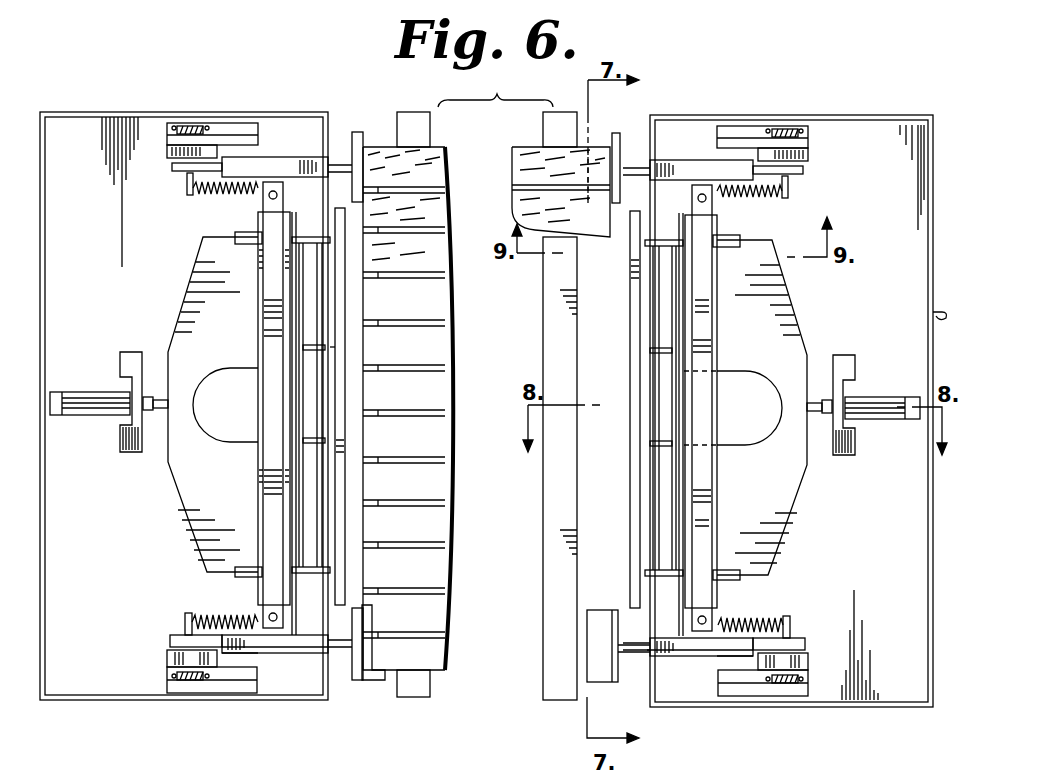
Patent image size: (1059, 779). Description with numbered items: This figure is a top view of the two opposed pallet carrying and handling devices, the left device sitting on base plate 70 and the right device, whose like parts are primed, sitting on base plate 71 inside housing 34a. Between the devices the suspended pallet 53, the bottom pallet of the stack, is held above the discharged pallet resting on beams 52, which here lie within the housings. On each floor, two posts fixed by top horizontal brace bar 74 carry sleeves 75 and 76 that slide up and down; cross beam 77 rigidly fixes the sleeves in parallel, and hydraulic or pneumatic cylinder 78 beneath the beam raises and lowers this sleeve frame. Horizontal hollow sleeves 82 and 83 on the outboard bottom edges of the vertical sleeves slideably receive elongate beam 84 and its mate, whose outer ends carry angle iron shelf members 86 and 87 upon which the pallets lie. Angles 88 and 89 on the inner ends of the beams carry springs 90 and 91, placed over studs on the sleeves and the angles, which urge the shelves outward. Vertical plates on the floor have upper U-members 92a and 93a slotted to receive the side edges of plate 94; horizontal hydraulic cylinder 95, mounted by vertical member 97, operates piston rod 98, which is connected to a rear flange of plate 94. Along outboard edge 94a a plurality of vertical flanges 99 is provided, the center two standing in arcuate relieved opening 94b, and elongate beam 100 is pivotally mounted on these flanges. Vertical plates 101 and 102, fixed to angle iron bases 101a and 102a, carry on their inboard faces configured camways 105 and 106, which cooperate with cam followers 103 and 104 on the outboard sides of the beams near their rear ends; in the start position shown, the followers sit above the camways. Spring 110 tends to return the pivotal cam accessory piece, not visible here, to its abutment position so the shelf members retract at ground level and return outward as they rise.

The housing 34a is at (934, 312).
The beams 52 is at (428, 692).
The suspended pallet 53 is at (513, 169).
The base plate 70 is at (122, 597).
The base plate 71 is at (874, 510).
The top horizontal brace bar 74 is at (700, 533).
The sleeve 75 is at (290, 628).
The sleeve 76 is at (290, 193).
The cross beam 77 is at (262, 477).
The hydraulic or pneumatic cylinder 78 is at (258, 398).
The horizontal hollow sleeve 82 is at (326, 690).
The horizontal hollow sleeve 83 is at (313, 157).
The elongate beam 84 is at (170, 641).
The angle iron shelf member 86 is at (367, 676).
The angle iron shelf member 87 is at (358, 135).
The angle 88 is at (189, 613).
The angle 89 is at (189, 193).
The spring 90 is at (243, 613).
The spring 91 is at (236, 193).
The upper U-member 92a is at (258, 568).
The upper U-member 93a is at (247, 246).
The plate 94 is at (188, 308).
The outboard edge of plate 94a is at (322, 348).
The arcuate relieved opening 94b is at (224, 438).
The horizontal hydraulic cylinder 95 is at (887, 405).
The vertical member 97 is at (137, 452).
The piston rod 98 is at (165, 395).
The vertical flanges 99 is at (314, 236).
The elongate beam 100 is at (345, 300).
The vertical plate 101 is at (248, 695).
The angle iron base 101a is at (212, 690).
The vertical plate 102 is at (250, 140).
The angle iron base 102a is at (223, 130).
The cam follower 103 is at (232, 662).
The cam follower 104 is at (248, 155).
The camway 105 is at (167, 657).
The camway 106 is at (185, 168).
The spring 110 is at (783, 137).